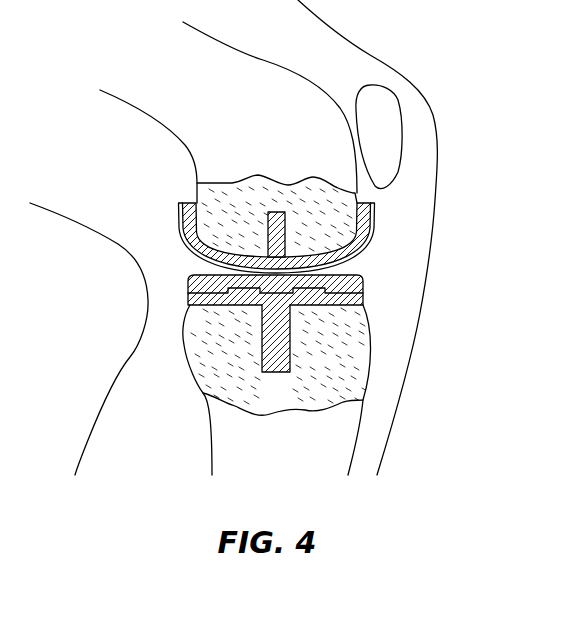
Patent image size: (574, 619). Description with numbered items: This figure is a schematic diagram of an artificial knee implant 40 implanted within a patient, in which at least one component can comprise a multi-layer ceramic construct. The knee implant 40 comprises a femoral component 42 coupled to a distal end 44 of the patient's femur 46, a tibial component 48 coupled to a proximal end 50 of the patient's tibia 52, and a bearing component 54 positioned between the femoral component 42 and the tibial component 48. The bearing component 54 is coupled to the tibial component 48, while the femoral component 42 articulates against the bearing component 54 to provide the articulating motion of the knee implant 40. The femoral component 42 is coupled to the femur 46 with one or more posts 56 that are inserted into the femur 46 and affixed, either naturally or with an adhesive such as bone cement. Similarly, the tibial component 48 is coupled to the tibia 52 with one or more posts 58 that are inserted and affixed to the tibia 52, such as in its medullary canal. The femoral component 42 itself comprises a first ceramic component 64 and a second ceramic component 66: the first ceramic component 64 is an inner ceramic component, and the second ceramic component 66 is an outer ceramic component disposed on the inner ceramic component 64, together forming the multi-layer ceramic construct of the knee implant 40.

The knee implant 40 is at (410, 246).
The femoral component 42 is at (241, 242).
The distal end 44 is at (390, 203).
The femur 46 is at (236, 62).
The tibial component 48 is at (205, 308).
The proximal end 50 is at (376, 327).
The tibia 52 is at (219, 445).
The bearing component 54 is at (357, 288).
The posts 56 is at (281, 227).
The posts 58 is at (274, 342).
The first ceramic component 64 is at (203, 247).
The second ceramic component 66 is at (181, 211).